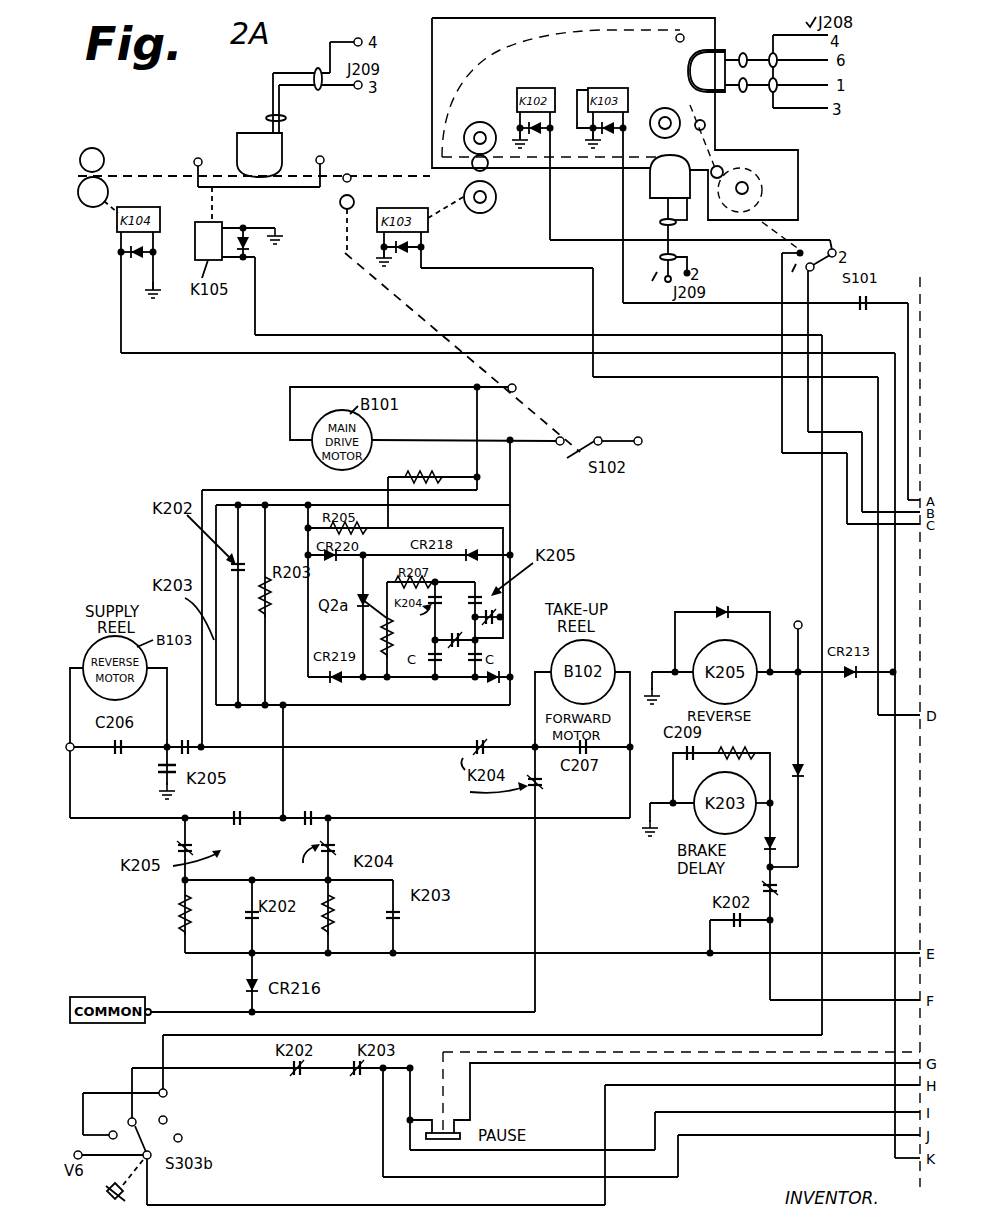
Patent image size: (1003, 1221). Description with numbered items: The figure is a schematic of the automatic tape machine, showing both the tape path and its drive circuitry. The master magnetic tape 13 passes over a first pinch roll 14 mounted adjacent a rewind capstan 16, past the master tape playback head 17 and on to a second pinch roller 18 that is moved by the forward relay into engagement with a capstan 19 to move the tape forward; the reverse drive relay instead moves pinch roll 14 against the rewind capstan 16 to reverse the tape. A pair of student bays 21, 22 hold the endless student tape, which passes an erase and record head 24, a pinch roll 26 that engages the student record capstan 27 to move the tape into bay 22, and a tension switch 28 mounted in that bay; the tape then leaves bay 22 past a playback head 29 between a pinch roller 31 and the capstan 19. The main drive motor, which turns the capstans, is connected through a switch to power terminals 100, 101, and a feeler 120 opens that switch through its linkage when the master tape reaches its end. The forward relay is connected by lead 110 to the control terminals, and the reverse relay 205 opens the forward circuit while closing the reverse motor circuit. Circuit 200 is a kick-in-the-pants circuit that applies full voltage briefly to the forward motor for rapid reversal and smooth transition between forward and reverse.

The magnetic tape 13 is at (377, 175).
The first pinch roll 14 is at (90, 202).
The rewind capstan 16 is at (102, 152).
The master tape playback head 17 is at (275, 146).
The second pinch roller 18 is at (482, 207).
The capstan 19 is at (488, 168).
The student bay 21 is at (610, 64).
The student bay 22 is at (683, 55).
The erase and record head 24 is at (703, 72).
The pinch roll 26 is at (679, 120).
The student record capstan 27 is at (706, 126).
The tension switch 28 is at (748, 185).
The playback head 29 is at (650, 193).
The pinch roller 31 is at (482, 132).
The power terminal 100 is at (512, 393).
The power terminal 101 is at (640, 436).
The lead 110 is at (594, 316).
The feeler 120 is at (340, 206).
The circuit 200 is at (184, 563).
The reverse relay 205 is at (612, 1040).